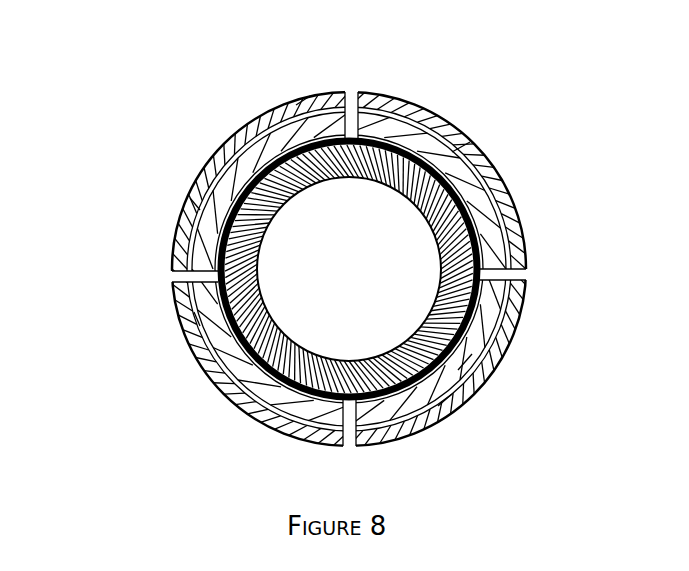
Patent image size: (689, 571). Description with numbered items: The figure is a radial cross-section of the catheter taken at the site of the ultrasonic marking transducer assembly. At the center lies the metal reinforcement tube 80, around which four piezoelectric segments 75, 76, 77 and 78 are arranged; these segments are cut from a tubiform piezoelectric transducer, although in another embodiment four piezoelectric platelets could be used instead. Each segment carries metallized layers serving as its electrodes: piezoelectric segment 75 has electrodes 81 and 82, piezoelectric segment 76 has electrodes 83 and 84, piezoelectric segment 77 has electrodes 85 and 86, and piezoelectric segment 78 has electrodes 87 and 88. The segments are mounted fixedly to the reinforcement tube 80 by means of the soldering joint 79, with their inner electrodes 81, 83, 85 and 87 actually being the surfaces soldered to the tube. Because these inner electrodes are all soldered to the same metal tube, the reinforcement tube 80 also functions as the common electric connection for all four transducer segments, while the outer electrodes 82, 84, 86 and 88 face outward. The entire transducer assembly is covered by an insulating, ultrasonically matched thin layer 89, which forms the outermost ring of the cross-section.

The piezoelectric segment 75 is at (237, 368).
The piezoelectric segment 76 is at (349, 253).
The piezoelectric segment 77 is at (393, 269).
The piezoelectric segment 78 is at (465, 362).
The soldering joint 79 is at (60, 272).
The reinforcement tube 80 is at (348, 240).
The electrode 81 is at (312, 269).
The electrode 82 is at (197, 319).
The electrode 83 is at (286, 244).
The electrode 84 is at (270, 66).
The electrode 85 is at (514, 119).
The electrode 86 is at (507, 227).
The electrode 87 is at (468, 323).
The electrode 88 is at (445, 400).
The insulating ultrasonically matched thin layer 89 is at (112, 173).